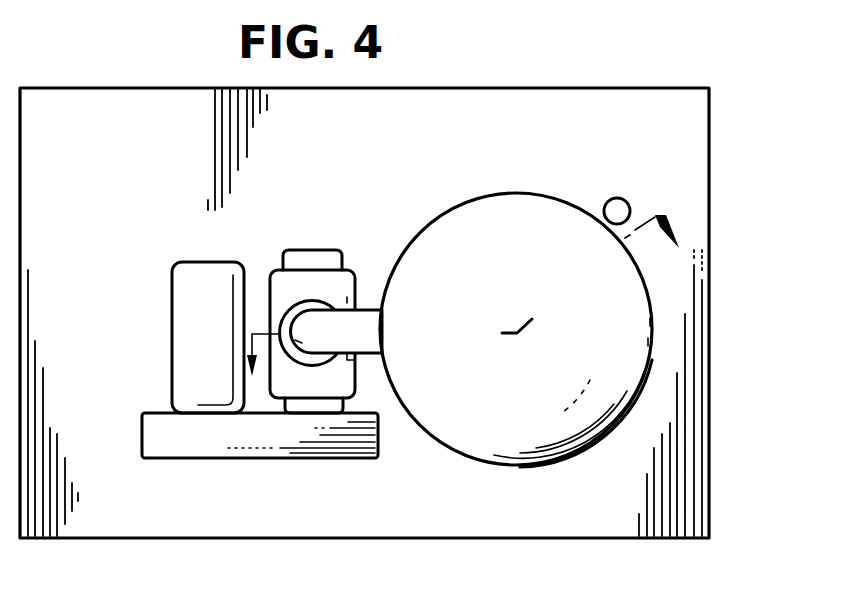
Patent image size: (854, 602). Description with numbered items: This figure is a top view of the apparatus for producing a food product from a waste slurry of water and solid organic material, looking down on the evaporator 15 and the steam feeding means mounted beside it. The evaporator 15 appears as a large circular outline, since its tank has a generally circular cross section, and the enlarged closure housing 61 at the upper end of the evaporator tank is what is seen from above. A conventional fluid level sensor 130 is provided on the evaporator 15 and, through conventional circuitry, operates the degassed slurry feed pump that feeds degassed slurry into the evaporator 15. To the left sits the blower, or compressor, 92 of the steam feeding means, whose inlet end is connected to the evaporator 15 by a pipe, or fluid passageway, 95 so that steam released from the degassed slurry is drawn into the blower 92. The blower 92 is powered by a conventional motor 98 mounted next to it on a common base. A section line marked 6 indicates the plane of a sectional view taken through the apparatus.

The motor 98 is at (234, 260).
The blower 92 is at (345, 265).
The pipe 95 is at (362, 310).
The section line 6 is at (463, 285).
The enlarged closure housing 61 is at (647, 293).
The evaporator 15 is at (660, 361).
The fluid level sensor 130 is at (630, 200).